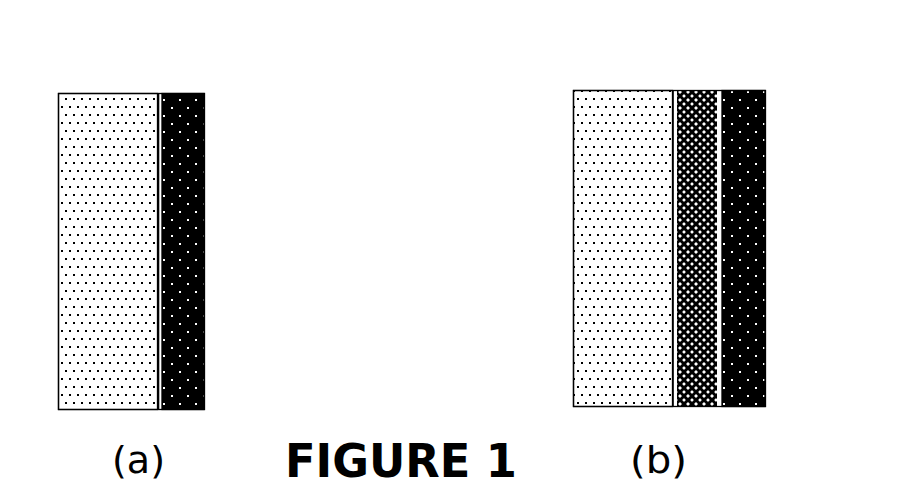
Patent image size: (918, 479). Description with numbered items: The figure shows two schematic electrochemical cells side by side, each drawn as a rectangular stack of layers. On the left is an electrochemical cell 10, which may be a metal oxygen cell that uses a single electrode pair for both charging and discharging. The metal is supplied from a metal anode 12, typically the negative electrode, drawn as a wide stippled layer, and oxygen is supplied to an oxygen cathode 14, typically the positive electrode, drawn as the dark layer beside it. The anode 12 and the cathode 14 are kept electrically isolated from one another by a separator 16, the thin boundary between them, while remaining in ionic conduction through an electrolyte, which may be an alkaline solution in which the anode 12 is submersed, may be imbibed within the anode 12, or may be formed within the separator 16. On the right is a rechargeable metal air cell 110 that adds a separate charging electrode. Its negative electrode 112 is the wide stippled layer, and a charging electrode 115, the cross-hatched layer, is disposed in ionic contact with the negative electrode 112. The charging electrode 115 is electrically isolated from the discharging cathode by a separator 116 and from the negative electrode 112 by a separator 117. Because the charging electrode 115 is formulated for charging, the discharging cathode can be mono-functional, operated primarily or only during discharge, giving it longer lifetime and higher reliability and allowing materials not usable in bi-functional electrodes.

The electrochemical cell 10 is at (170, 213).
The metal anode 12 is at (90, 93).
The oxygen cathode 14 is at (200, 93).
The separator 16 is at (160, 93).
The rechargeable metal air cell 110 is at (710, 210).
The negative electrode 112 is at (617, 90).
The charging electrode 115 is at (693, 90).
The separator 116 is at (733, 90).
The separator 117 is at (673, 90).